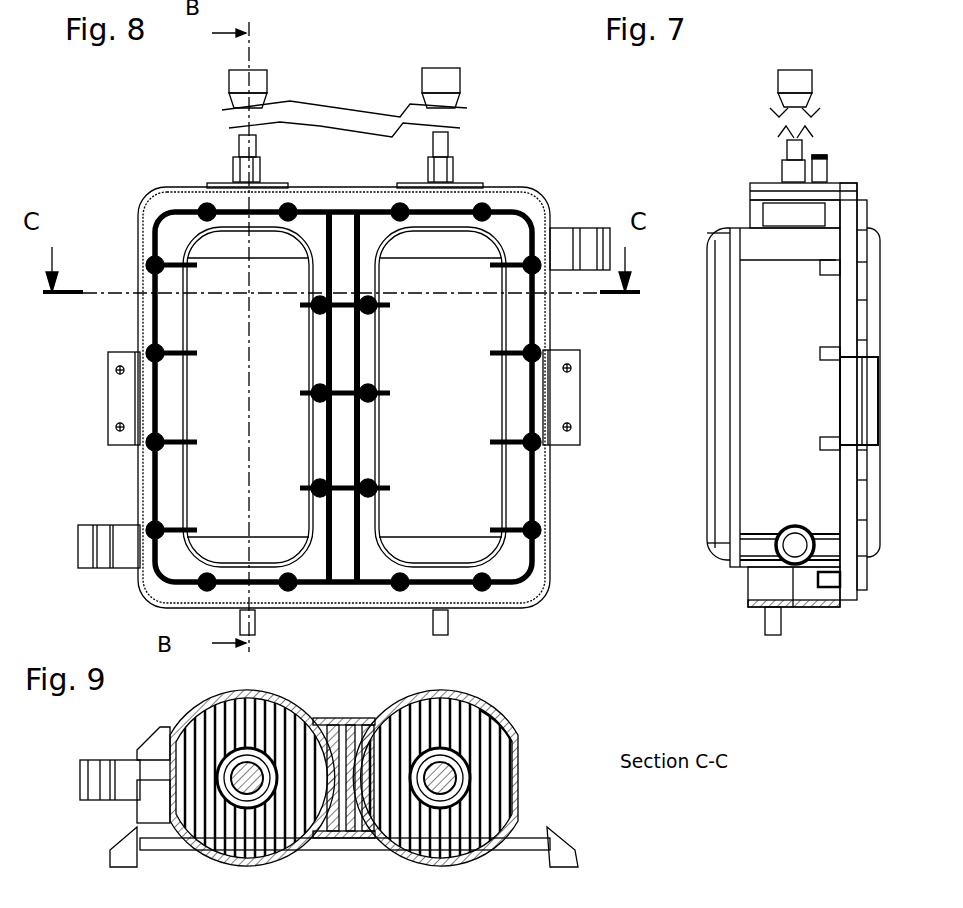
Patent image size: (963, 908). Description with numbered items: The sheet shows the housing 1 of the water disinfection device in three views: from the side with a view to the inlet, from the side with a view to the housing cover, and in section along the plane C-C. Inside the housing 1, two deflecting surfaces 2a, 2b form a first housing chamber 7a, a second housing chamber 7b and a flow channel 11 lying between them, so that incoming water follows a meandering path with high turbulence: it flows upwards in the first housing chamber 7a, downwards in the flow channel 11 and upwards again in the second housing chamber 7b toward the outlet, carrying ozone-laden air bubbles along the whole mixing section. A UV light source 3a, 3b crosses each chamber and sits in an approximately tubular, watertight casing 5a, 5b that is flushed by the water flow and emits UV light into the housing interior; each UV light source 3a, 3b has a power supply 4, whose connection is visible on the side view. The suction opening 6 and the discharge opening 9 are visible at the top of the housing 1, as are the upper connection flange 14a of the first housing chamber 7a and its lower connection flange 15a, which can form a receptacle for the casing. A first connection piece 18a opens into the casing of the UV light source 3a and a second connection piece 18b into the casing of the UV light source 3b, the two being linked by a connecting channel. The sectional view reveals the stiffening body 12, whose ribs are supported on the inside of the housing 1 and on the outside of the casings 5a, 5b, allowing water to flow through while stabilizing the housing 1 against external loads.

In FIG. 8, the housing 1 is at (344, 395).
In FIG. 9, the housing 1 is at (490, 705).
In FIG. 9, the deflecting surface 2a is at (322, 832).
In FIG. 9, the deflecting surface 2b is at (368, 713).
In FIG. 9, the UV light source 3a is at (190, 715).
In FIG. 9, the UV light source 3b is at (460, 780).
In FIG. 8, the power supply 4 is at (238, 148).
In FIG. 7, the power supply 4 is at (783, 160).
In FIG. 9, the casing 5a is at (217, 783).
In FIG. 9, the casing 5b is at (472, 768).
In FIG. 8, the suction opening 6 is at (440, 165).
In FIG. 8, the first housing chamber 7a is at (228, 462).
In FIG. 8, the second housing chamber 7b is at (457, 462).
In FIG. 8, the discharge opening 9 is at (238, 163).
In FIG. 7, the discharge opening 9 is at (828, 165).
In FIG. 9, the flow channel 11 is at (350, 840).
In FIG. 9, the stiffening body 12 is at (488, 752).
In FIG. 7, the upper connection flange 14a is at (750, 208).
In FIG. 7, the lower connection flange 15a is at (743, 583).
In FIG. 8, the first connection piece 18a is at (252, 622).
In FIG. 7, the first connection piece 18a is at (780, 635).
In FIG. 8, the second connection piece 18b is at (448, 622).